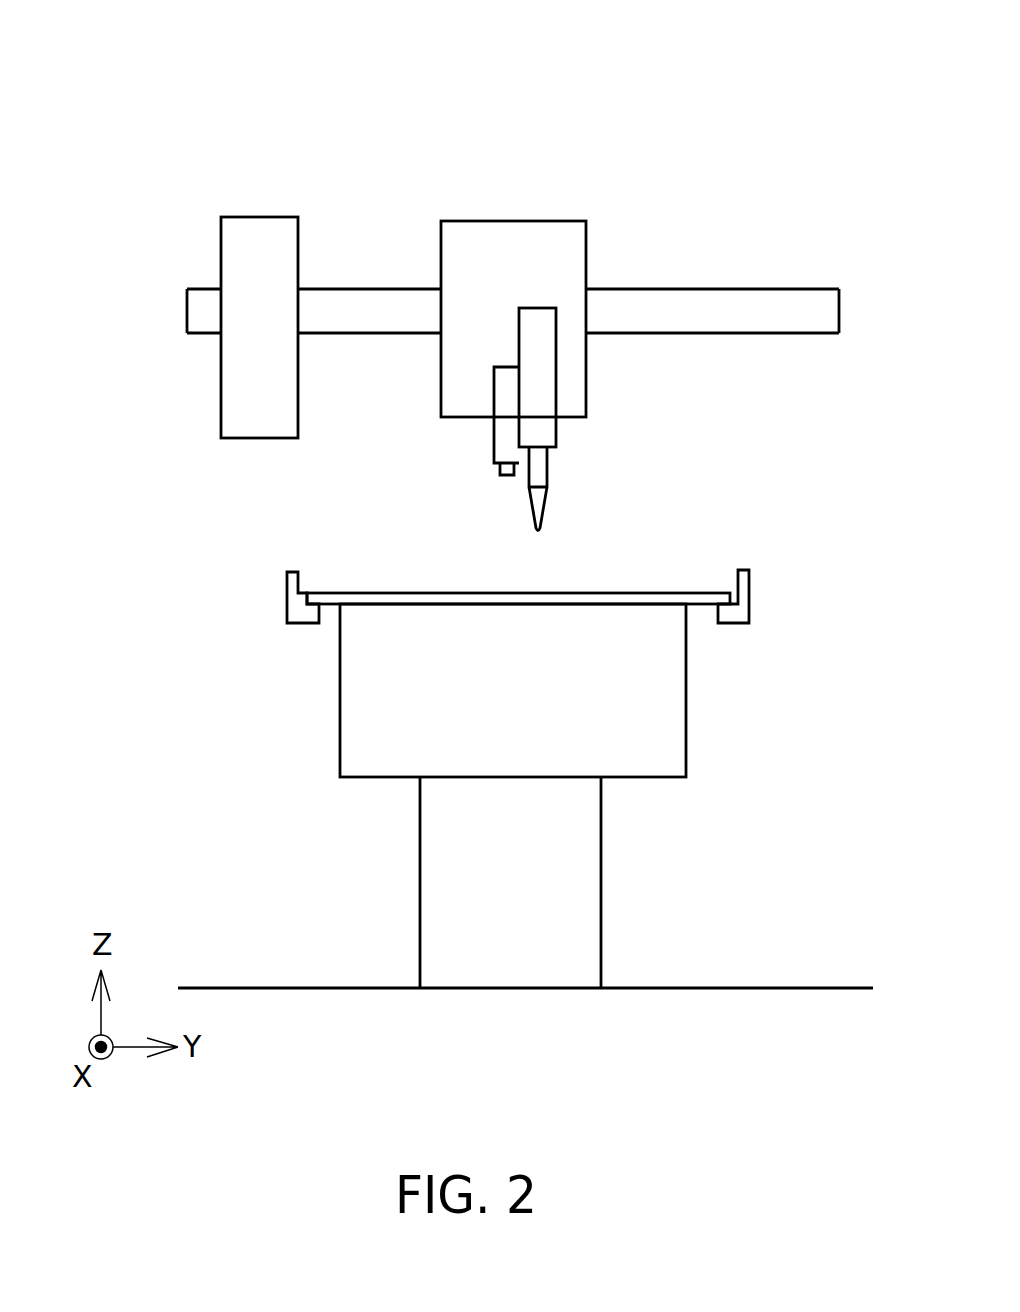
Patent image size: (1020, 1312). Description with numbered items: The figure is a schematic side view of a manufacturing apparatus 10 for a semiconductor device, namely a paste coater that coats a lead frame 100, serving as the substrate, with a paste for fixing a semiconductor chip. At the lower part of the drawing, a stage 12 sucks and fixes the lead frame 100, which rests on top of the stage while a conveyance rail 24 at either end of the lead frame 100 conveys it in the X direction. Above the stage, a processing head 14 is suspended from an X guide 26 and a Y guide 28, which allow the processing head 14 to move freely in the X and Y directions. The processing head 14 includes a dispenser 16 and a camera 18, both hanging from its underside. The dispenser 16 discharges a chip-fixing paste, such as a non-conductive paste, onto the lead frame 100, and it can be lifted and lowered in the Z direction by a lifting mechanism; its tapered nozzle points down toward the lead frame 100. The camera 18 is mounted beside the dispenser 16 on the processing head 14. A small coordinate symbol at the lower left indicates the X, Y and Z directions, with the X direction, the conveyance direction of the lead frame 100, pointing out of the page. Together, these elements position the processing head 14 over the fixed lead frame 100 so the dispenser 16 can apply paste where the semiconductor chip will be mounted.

The manufacturing apparatus 10 is at (693, 122).
The stage 12 is at (687, 703).
The processing head 14 is at (527, 220).
The dispenser 16 is at (556, 377).
The camera 18 is at (494, 443).
The conveyance rail 24 is at (750, 597).
The X guide 26 is at (242, 217).
The Y guide 28 is at (731, 289).
The lead frame 100 is at (652, 593).